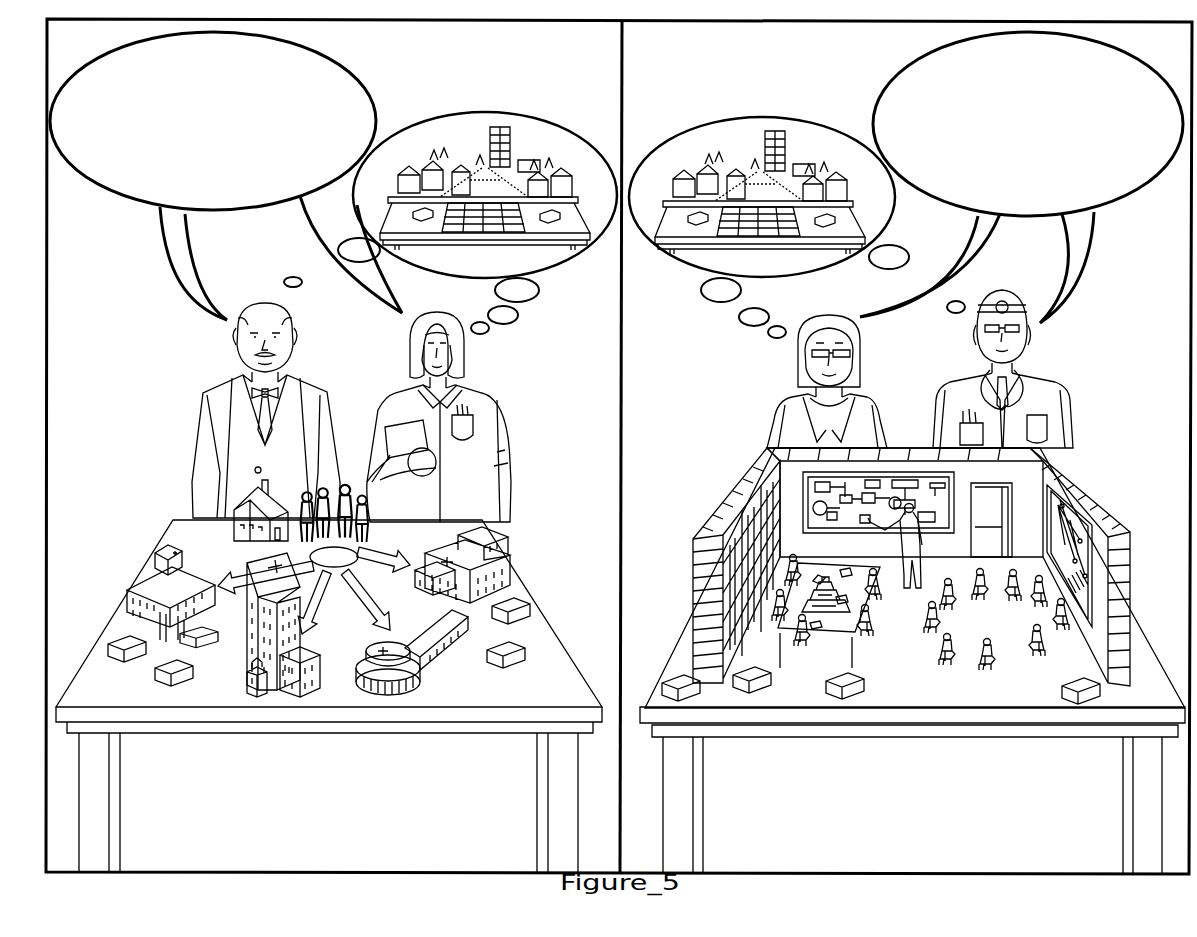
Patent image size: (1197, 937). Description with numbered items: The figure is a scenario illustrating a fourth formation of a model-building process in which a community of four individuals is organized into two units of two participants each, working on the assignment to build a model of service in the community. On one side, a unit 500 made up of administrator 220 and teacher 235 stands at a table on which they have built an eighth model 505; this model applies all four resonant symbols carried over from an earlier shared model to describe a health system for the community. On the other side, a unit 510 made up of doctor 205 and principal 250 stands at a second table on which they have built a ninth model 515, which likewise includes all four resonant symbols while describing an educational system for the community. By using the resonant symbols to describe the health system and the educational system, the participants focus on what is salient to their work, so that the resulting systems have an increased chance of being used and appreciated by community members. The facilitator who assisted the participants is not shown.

The unit 500 is at (552, 75).
The unit 510 is at (663, 71).
The teacher 235 is at (190, 368).
The administrator 220 is at (494, 382).
The eighth model 505 is at (530, 527).
The principal 250 is at (788, 382).
The doctor 205 is at (1038, 352).
The ninth model 515 is at (1093, 471).